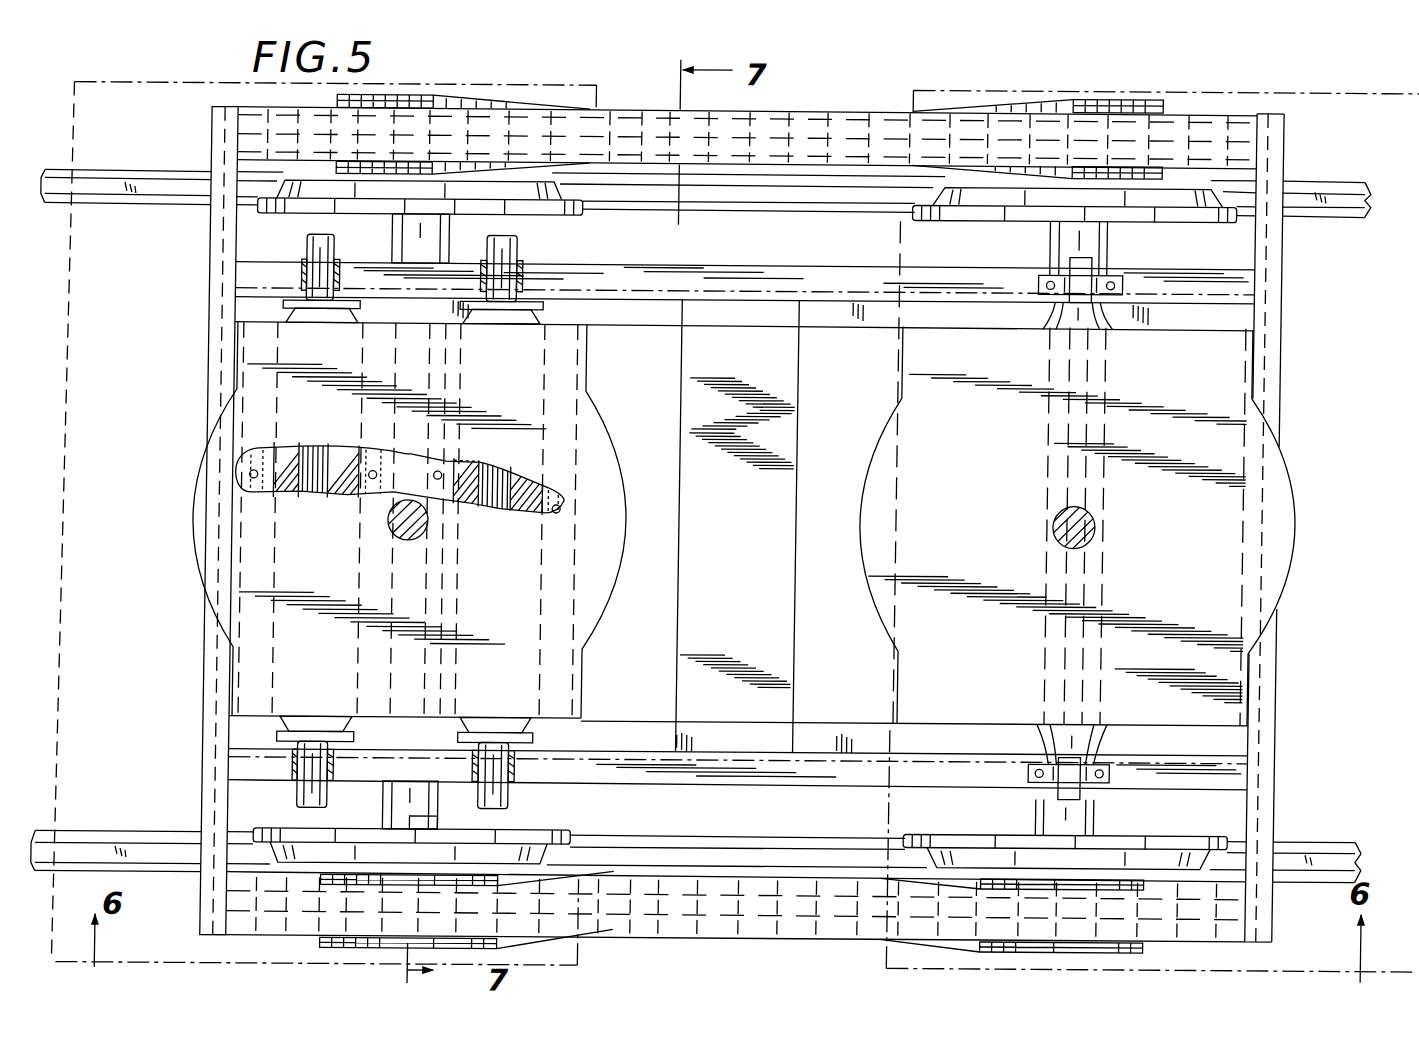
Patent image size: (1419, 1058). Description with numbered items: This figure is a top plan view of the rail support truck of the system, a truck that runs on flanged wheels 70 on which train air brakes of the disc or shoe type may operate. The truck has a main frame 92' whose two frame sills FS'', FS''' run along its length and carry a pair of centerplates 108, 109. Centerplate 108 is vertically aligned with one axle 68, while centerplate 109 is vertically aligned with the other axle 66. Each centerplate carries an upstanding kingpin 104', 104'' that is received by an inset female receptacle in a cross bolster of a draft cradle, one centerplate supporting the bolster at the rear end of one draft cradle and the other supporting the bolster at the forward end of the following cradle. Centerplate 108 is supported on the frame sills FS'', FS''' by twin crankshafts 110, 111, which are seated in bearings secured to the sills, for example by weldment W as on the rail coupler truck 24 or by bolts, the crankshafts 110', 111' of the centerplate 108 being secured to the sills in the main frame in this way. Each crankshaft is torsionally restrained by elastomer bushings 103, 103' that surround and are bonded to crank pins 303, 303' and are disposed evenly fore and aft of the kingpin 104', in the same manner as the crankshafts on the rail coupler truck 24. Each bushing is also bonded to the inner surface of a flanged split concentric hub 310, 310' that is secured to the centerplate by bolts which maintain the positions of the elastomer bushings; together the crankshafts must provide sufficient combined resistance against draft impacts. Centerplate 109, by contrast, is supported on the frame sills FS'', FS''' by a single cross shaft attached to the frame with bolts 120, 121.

The rail coupler truck 24 is at (183, 877).
The axle 66 is at (1082, 813).
The axle 68 is at (391, 807).
The flanged wheels 70 is at (282, 831).
The main frame 92' is at (776, 524).
The elastomer bushings 103 is at (400, 463).
The elastomer bushings 103' is at (487, 457).
The kingpin 104' is at (440, 535).
The kingpin 104'' is at (1109, 526).
The centerplate 108 is at (614, 453).
The centerplate 109 is at (1295, 500).
The crankshaft 110 is at (544, 753).
The crankshaft 110' is at (515, 276).
The crankshaft 111 is at (248, 761).
The crankshaft 111' is at (334, 276).
The bolt 120 is at (1098, 768).
The bolt 121 is at (1042, 777).
The crank pin 303 is at (334, 491).
The crank pin 303' is at (514, 492).
The flanged split concentric hub 310 is at (257, 497).
The flanged split concentric hub 310' is at (452, 492).
The weldment W is at (300, 270).
The frame sill FS'' is at (738, 733).
The frame sill FS''' is at (744, 319).